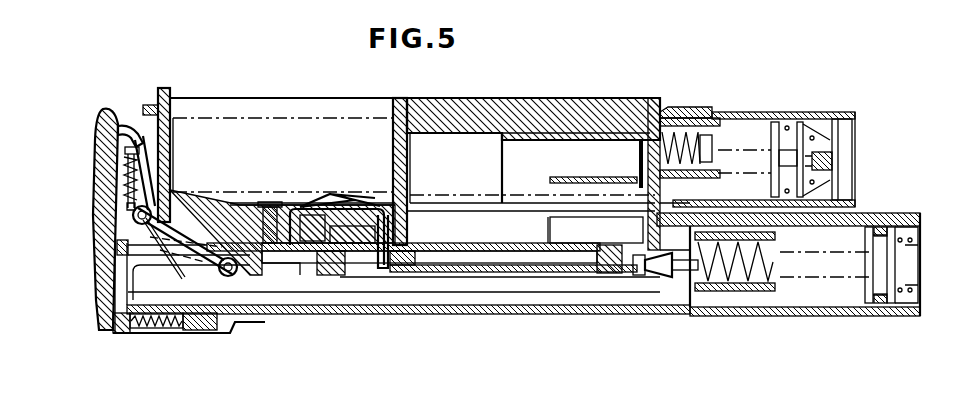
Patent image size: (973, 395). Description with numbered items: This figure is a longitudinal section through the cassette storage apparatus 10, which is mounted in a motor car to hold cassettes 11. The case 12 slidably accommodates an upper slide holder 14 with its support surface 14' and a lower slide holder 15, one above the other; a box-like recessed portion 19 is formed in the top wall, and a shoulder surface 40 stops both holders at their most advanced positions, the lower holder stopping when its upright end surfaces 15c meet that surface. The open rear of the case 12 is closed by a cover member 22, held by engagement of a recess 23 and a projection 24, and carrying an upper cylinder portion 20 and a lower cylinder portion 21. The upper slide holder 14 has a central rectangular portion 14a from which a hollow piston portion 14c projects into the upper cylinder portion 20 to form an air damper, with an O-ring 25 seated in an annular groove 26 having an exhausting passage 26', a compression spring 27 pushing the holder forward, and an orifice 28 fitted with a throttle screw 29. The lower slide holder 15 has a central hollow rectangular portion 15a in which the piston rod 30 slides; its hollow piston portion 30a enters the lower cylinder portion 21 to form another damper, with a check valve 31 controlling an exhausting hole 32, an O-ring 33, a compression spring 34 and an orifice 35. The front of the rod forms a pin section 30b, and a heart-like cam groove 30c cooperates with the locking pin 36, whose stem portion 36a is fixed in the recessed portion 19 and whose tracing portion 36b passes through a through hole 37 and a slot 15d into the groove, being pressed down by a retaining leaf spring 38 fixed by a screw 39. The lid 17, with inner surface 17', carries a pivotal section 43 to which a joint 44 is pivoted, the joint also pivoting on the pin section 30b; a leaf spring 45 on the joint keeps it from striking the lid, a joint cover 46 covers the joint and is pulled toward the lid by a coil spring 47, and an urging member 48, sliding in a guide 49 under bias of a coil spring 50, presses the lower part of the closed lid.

The apparatus 10 is at (931, 325).
The cassette 11 is at (313, 117).
The case 12 is at (590, 315).
The upper slide holder 14 is at (526, 153).
The support surface 14' is at (493, 132).
The central rectangular portion 14a is at (576, 160).
The hollow piston portion 14c is at (738, 140).
The lower slide holder 15 is at (492, 306).
The central hollow rectangular portion 15a is at (146, 280).
The upright end surfaces 15c is at (548, 232).
The slot 15d is at (522, 246).
The lid 17 is at (79, 219).
The inner surface 17' is at (128, 100).
The recessed portion 19 is at (245, 113).
The upper cylinder portion 20 is at (842, 118).
The lower cylinder portion 21 is at (905, 280).
The cover member 22 is at (780, 314).
The recess 23 is at (662, 108).
The projection 24 is at (690, 108).
The O-ring 25 is at (776, 122).
The annular groove 26 is at (816, 131).
The exhausting passage 26' is at (849, 162).
The compression spring 27 is at (703, 147).
The orifice 28 is at (822, 150).
The throttle screw 29 is at (832, 160).
The piston rod 30 is at (443, 283).
The hollow piston portion 30a is at (842, 265).
The pin section 30b is at (288, 264).
The heart-like cam groove 30c is at (374, 276).
The check valve 31 is at (655, 272).
The exhausting hole 32 is at (684, 276).
The O-ring 33 is at (880, 304).
The compression spring 34 is at (748, 286).
The orifice 35 is at (895, 230).
The locking pin 36 is at (352, 212).
The stem portion 36a is at (305, 269).
The tracing portion 36b is at (432, 248).
The through hole 37 is at (383, 210).
The retaining leaf spring 38 is at (318, 200).
The screw 39 is at (268, 203).
The shoulder surface 40 is at (425, 133).
The pivotal section 43 is at (133, 215).
The joint 44 is at (182, 236).
The leaf spring 45 is at (232, 276).
The joint cover 46 is at (142, 144).
The coil spring 47 is at (135, 178).
The urging member 48 is at (120, 322).
The guide 49 is at (205, 330).
The coil spring 50 is at (170, 330).